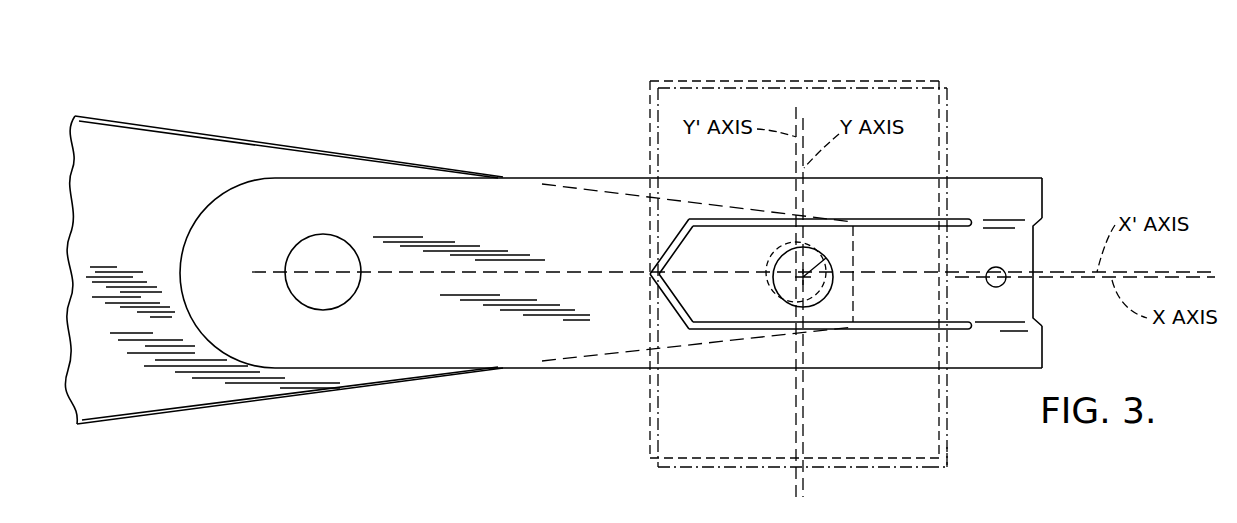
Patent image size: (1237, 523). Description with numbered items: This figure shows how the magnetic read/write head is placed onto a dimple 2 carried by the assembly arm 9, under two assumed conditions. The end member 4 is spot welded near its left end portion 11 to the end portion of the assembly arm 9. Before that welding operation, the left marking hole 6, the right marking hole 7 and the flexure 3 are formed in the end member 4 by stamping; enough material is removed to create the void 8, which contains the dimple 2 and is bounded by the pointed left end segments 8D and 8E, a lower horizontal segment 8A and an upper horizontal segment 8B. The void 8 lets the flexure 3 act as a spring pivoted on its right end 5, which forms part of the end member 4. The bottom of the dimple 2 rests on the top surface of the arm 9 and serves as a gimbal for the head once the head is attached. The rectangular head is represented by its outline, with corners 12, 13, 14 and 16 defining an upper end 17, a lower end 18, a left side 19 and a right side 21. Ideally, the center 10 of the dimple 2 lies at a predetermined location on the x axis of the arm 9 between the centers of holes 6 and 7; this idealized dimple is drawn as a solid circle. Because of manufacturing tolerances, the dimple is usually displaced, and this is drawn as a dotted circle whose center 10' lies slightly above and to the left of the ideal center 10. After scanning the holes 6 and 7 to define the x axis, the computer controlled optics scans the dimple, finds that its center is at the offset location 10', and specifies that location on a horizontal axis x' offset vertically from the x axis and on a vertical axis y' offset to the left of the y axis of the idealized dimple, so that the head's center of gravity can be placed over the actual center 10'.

The dimple 2 is at (785, 290).
The flexure 3 is at (716, 313).
The end member 4 is at (988, 178).
The right end 5 is at (1036, 321).
The left marking hole 6 is at (345, 296).
The right marking hole 7 is at (1002, 286).
The void 8 is at (658, 318).
The lower horizontal segment 8A is at (858, 330).
The upper horizontal segment 8B is at (858, 222).
The pointed left end segment 8D is at (681, 228).
The pointed left end segment 8E is at (652, 288).
The assembly arm 9 is at (282, 165).
The center of dimple 10 is at (835, 274).
The offset location of dimple center 10' is at (763, 272).
The left end portion 11 is at (185, 245).
The corner 12 is at (650, 80).
The corner 13 is at (948, 88).
The corner 14 is at (652, 470).
The frame corner 16 is at (948, 468).
The upper end 17 is at (760, 81).
The lower end 18 is at (828, 467).
The left side 19 is at (650, 418).
The right side 21 is at (940, 424).